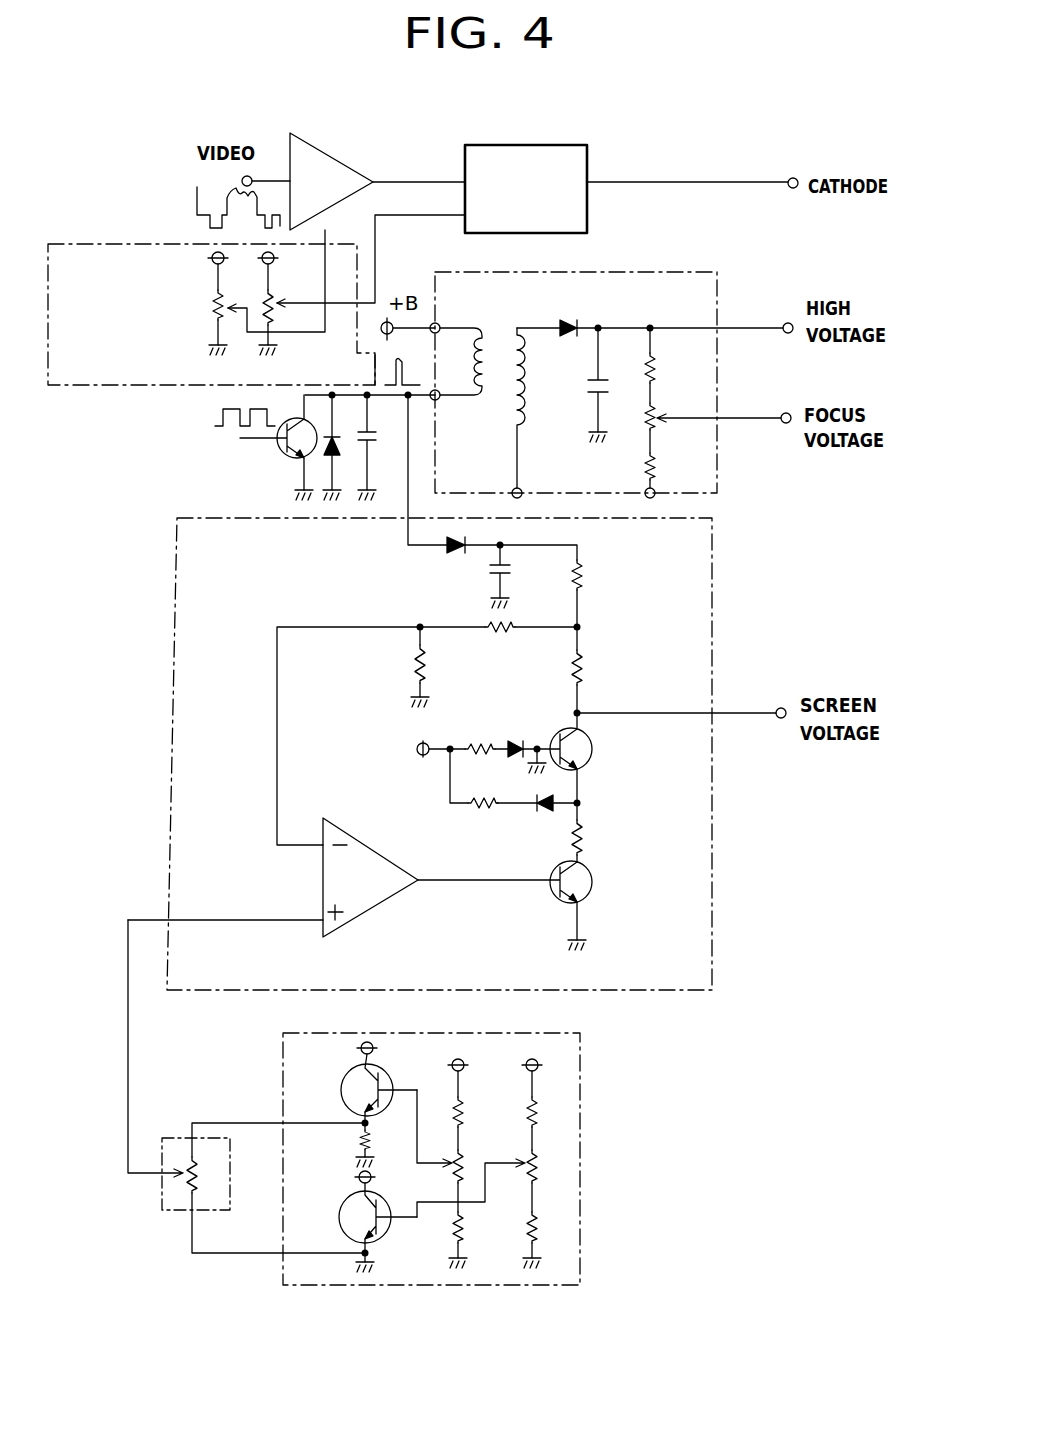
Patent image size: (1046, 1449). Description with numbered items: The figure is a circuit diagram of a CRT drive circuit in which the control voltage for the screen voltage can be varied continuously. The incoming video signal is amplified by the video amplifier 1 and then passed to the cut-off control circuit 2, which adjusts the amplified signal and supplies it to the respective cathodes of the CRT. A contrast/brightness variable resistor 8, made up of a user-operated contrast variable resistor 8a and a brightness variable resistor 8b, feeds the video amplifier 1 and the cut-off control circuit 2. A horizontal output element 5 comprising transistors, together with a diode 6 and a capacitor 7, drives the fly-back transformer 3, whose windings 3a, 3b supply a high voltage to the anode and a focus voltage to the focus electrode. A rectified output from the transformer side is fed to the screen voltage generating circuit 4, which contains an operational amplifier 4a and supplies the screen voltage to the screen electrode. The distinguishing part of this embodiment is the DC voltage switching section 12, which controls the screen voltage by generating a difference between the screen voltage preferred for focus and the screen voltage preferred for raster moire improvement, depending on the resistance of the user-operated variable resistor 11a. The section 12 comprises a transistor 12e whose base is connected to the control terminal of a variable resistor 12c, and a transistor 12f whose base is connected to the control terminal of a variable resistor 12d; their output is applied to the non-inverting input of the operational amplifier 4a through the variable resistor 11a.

The video amplifier 1 is at (340, 156).
The cut-off control circuit 2 is at (545, 146).
The fly-back transformer 3 is at (606, 355).
The fly-back transformer winding 3a is at (497, 330).
The fly-back transformer winding 3b is at (517, 328).
The screen voltage generating circuit 4 is at (455, 692).
The operational amplifier 4a is at (366, 840).
The horizontal output element 5 is at (286, 457).
The diode 6 is at (337, 455).
The capacitor 7 is at (383, 443).
The contrast/brightness variable resistor 8 is at (211, 352).
The contrast variable resistor 8a is at (212, 303).
The brightness variable resistor 8b is at (270, 300).
The variable resistor 11a is at (166, 1212).
The DC voltage switching section 12 is at (474, 1159).
The variable resistor 12c is at (472, 1140).
The variable resistor 12d is at (513, 1175).
The transistor 12e is at (343, 1082).
The transistor 12f is at (372, 1238).